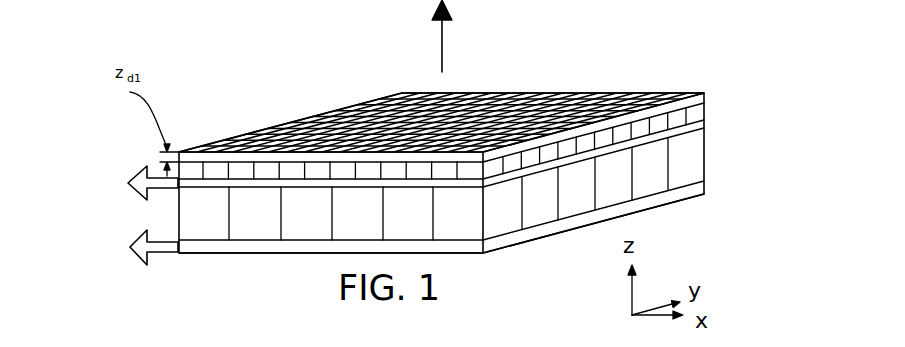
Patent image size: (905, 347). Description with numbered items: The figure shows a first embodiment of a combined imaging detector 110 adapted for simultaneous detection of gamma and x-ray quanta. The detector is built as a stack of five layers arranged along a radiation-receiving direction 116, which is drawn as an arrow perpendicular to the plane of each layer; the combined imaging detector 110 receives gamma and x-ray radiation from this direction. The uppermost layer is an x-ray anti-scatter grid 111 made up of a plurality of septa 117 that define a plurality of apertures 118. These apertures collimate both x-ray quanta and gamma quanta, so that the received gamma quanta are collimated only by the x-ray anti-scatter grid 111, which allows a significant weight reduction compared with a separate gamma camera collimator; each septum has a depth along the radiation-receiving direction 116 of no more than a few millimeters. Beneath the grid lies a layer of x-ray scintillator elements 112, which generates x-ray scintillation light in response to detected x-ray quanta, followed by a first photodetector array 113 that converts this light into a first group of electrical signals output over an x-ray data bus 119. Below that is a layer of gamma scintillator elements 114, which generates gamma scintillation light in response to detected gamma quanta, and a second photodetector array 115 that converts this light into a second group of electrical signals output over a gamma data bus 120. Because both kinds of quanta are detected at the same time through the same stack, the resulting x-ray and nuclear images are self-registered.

The combined imaging detector 110 is at (282, 80).
The x-ray anti-scatter grid 111 is at (705, 97).
The layer of x-ray scintillator elements 112 is at (705, 117).
The first photodetector array 113 is at (705, 127).
The layer of gamma scintillator elements 114 is at (702, 157).
The second photodetector array 115 is at (705, 185).
The radiation-receiving direction 116 is at (466, 36).
The septa 117 is at (597, 44).
The apertures 118 is at (612, 90).
The x-ray data bus 119 is at (142, 168).
The gamma data bus 120 is at (132, 232).